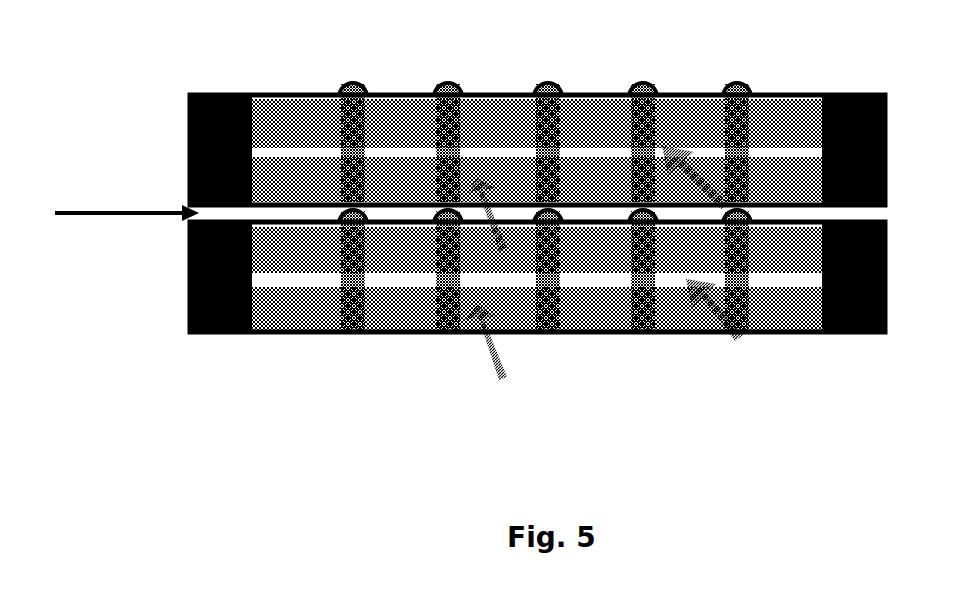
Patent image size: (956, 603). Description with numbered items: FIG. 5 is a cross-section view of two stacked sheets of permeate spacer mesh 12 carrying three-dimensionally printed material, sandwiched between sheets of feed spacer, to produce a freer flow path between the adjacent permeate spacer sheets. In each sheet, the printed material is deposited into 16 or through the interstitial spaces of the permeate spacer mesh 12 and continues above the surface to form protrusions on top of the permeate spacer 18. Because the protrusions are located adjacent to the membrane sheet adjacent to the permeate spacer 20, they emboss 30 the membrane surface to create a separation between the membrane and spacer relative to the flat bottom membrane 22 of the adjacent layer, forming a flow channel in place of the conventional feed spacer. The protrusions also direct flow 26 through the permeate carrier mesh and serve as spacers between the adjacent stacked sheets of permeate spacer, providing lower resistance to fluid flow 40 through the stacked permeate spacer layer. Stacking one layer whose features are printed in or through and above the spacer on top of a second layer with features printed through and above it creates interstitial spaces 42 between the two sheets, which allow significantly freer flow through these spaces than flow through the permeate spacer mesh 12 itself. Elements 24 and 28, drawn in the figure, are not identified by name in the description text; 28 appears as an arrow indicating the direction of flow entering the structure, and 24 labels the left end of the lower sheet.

The permeate spacer mesh 12 is at (283, 137).
The deposited feature into the permeate spacer 16 is at (555, 290).
The protrusions on top of the permeate spacer 18 is at (356, 212).
The membrane sheet adjacent to the permeate spacer 20 is at (408, 95).
The flat bottom membrane 22 is at (296, 333).
The second substrate body 24 is at (192, 282).
The directed flow 26 is at (490, 372).
The fluid flow direction 28 is at (118, 210).
The embossing 30 is at (639, 82).
The fluid flow through the stacked permeate spacer layer 40 is at (720, 318).
The interstitial spaces 42 is at (600, 148).